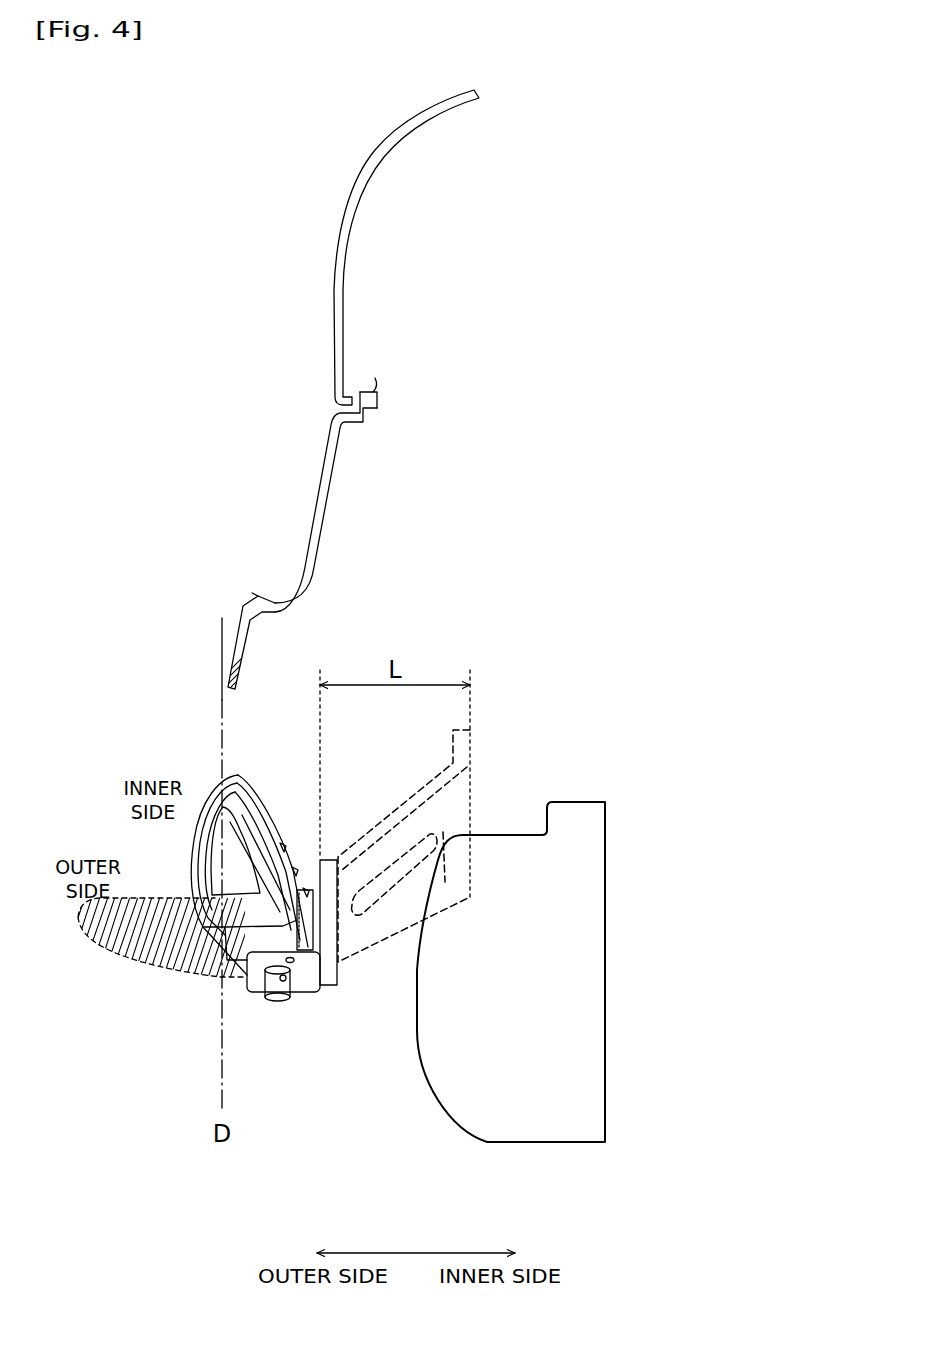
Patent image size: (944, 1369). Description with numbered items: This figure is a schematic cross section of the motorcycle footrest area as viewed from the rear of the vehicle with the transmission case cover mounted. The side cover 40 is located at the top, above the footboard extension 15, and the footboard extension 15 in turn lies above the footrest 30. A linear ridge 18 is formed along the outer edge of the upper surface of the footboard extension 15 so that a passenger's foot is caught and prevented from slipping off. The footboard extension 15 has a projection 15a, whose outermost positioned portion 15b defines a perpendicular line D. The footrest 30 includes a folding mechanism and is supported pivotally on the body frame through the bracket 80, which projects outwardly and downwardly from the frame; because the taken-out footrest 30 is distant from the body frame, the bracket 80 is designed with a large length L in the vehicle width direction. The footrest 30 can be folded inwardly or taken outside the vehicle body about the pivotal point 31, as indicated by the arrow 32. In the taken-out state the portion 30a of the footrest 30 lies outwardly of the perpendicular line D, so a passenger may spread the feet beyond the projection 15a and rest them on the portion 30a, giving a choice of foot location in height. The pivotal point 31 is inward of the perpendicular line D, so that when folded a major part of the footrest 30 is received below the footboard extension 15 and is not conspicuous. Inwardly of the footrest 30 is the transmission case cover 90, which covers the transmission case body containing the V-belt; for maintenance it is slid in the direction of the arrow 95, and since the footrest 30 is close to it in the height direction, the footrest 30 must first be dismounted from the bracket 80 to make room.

The side cover 40 is at (320, 295).
The footboard extension 15 is at (266, 590).
The projection 15a is at (243, 606).
The outermost positioned portion 15b is at (220, 672).
The linear ridge 18 is at (252, 593).
The footrest 30 is at (252, 776).
The portion 30a is at (173, 960).
The pivotal point 31 is at (292, 998).
The arrow 32 is at (181, 841).
The bracket 80 is at (457, 802).
The transmission case cover 90 is at (535, 1123).
The arrow 95 is at (400, 977).